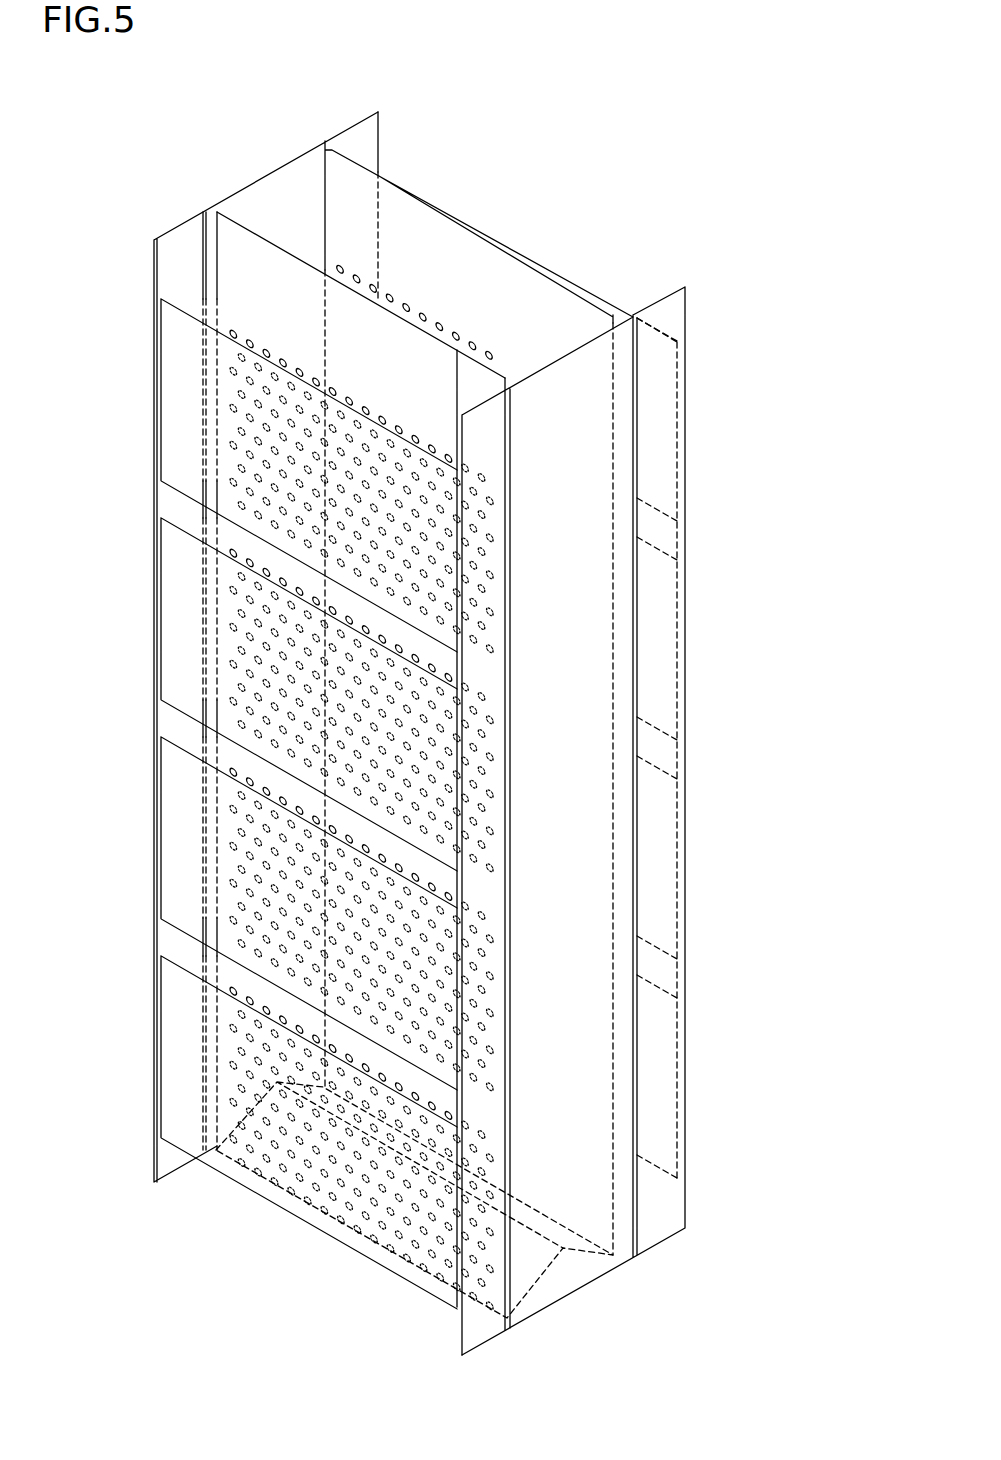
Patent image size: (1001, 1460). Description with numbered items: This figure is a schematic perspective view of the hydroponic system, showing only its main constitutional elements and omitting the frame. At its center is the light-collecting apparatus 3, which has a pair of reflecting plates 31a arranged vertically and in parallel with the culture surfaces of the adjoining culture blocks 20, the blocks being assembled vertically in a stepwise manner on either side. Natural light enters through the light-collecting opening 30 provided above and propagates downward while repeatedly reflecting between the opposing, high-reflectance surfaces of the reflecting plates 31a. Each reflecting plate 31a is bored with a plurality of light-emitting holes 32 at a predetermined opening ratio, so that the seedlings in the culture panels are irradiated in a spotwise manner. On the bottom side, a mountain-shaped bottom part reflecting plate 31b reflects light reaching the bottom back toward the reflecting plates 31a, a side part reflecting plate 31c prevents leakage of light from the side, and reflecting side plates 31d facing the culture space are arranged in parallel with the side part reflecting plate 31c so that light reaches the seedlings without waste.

The light-collecting apparatus 3 is at (585, 146).
The light-collecting opening 30 is at (342, 197).
The culture block 20 is at (175, 405).
The reflecting plate 31a is at (467, 260).
The bottom part reflecting plate 31b is at (525, 1265).
The side part reflecting plate 31c is at (207, 743).
The reflecting side plate 31d is at (360, 137).
The light-emitting hole 32 is at (230, 450).